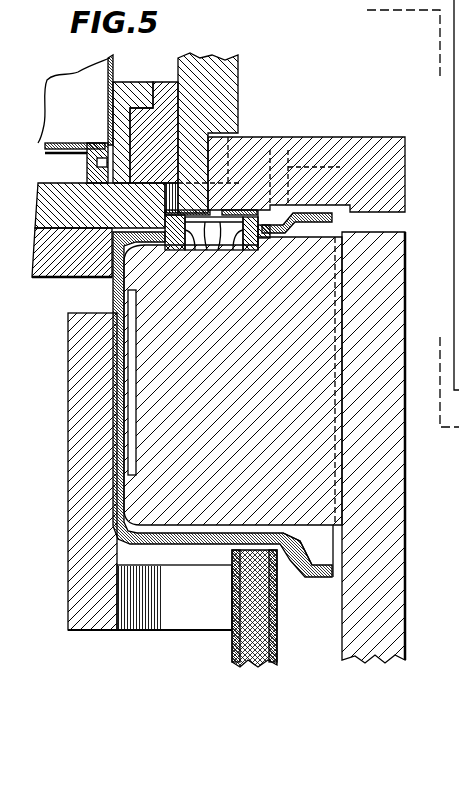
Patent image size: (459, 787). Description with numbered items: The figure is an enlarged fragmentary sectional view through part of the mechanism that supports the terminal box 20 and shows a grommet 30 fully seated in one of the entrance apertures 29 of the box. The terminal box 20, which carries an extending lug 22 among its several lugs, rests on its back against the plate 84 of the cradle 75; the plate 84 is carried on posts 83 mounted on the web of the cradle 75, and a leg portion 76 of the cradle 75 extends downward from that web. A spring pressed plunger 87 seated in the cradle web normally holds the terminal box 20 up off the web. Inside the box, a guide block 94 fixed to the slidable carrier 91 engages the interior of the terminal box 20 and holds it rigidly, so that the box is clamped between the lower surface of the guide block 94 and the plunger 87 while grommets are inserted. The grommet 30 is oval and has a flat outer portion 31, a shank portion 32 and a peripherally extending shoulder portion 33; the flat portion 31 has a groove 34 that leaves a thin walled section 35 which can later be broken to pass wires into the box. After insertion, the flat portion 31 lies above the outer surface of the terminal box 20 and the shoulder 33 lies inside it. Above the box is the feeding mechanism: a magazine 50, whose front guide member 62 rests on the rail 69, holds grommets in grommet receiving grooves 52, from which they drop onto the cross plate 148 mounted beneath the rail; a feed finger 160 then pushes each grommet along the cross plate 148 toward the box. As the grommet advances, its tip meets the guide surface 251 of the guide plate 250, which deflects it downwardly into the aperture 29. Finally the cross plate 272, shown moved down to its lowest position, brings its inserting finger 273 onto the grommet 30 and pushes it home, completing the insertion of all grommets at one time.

The terminal box 20 is at (112, 311).
The extending lug 22 is at (301, 205).
The entrance aperture 29 is at (188, 240).
The grommet 30 is at (100, 141).
The flat outer portion 31 is at (240, 200).
The shank portion 32 is at (238, 218).
The shoulder portion 33 is at (260, 248).
The groove 34 is at (207, 218).
The thin walled section 35 is at (210, 223).
The magazine 50 is at (78, 61).
The grommet receiving groove 52 is at (72, 97).
The guide member 62 is at (125, 97).
The rail 69 is at (163, 97).
The cradle 75 is at (62, 498).
The leg portion 76 is at (275, 652).
The post 83 is at (175, 620).
The plate 84 is at (77, 407).
The spring pressed plunger 87 is at (255, 550).
The slidable carrier 91 is at (395, 592).
The guide block 94 is at (277, 448).
The cross plate 148 is at (75, 265).
The feed finger 160 is at (75, 215).
The guide plate 250 is at (367, 153).
The guide surface 251 is at (212, 197).
The cross plate 272 is at (209, 72).
The inserting finger 273 is at (217, 205).